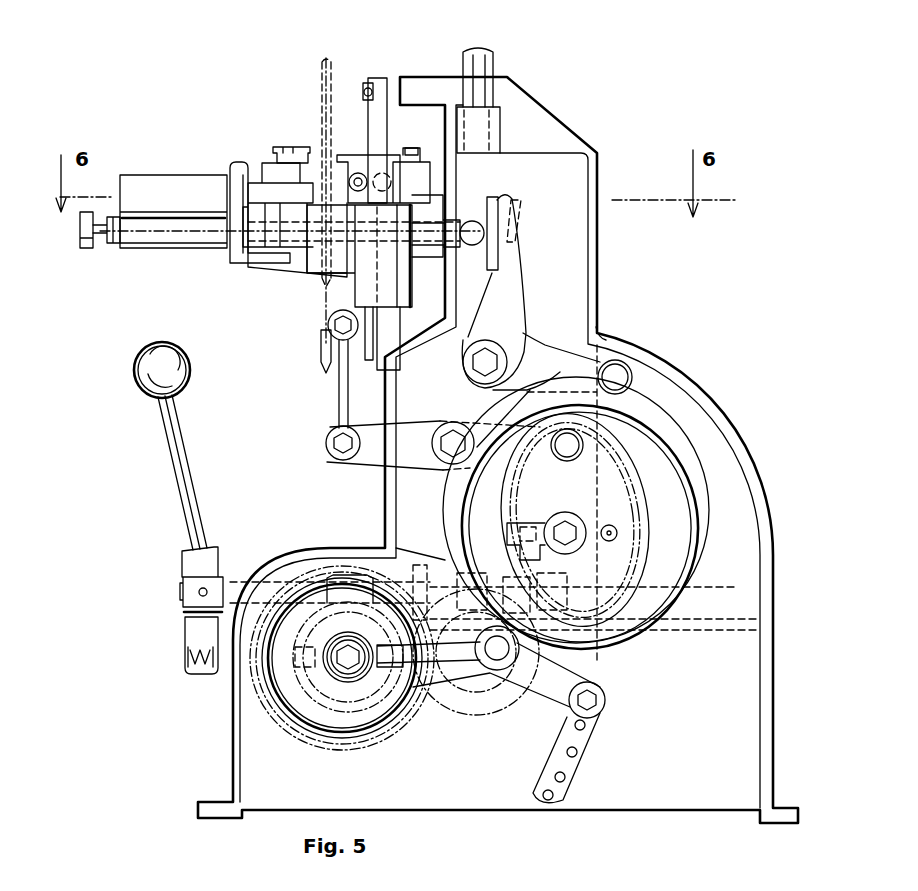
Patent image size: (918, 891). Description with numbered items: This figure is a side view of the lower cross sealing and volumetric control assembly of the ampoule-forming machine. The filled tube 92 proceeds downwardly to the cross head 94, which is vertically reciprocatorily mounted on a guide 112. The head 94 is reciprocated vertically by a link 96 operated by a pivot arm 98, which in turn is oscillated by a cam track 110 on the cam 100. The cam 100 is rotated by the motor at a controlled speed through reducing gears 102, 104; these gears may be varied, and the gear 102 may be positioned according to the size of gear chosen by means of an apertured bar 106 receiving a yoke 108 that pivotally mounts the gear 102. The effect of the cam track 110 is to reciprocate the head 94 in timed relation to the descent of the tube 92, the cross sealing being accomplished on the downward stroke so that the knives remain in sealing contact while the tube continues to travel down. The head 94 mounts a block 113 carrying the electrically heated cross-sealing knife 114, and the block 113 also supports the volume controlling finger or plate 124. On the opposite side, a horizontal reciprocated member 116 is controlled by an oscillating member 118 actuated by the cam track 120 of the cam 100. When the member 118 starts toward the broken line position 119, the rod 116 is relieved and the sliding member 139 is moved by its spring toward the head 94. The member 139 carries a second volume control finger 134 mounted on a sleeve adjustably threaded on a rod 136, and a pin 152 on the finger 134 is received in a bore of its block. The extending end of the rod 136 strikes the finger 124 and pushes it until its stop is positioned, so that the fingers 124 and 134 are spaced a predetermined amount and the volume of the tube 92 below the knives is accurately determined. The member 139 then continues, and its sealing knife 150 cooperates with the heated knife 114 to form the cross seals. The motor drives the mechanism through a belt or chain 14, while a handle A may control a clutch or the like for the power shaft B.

The belt or chain 14 is at (87, 248).
The filled tube 92 is at (320, 95).
The cross head 94 is at (412, 292).
The link 96 is at (335, 405).
The pivot arm 98 is at (422, 432).
The cam 100 is at (665, 425).
The reducing gear 102 is at (505, 700).
The reducing gear 104 is at (660, 590).
The apertured bar 106 is at (578, 742).
The yoke 108 is at (570, 672).
The cam track 110 is at (668, 490).
The guide 112 is at (375, 135).
The block 113 is at (372, 178).
The heated cross-sealing knife 114 is at (350, 168).
The horizontal reciprocated member 116 is at (272, 250).
The oscillating member 118 is at (505, 275).
The broken line position 119 is at (520, 208).
The cam track 120 is at (640, 390).
The volume controlling finger or plate 124 is at (313, 177).
The second volume control finger 134 is at (312, 190).
The rod 136 is at (98, 245).
The sliding member 139 is at (200, 188).
The sealing knife 150 is at (305, 160).
The cross seal 152 is at (326, 282).
The handle A is at (190, 475).
The power shaft B is at (342, 667).